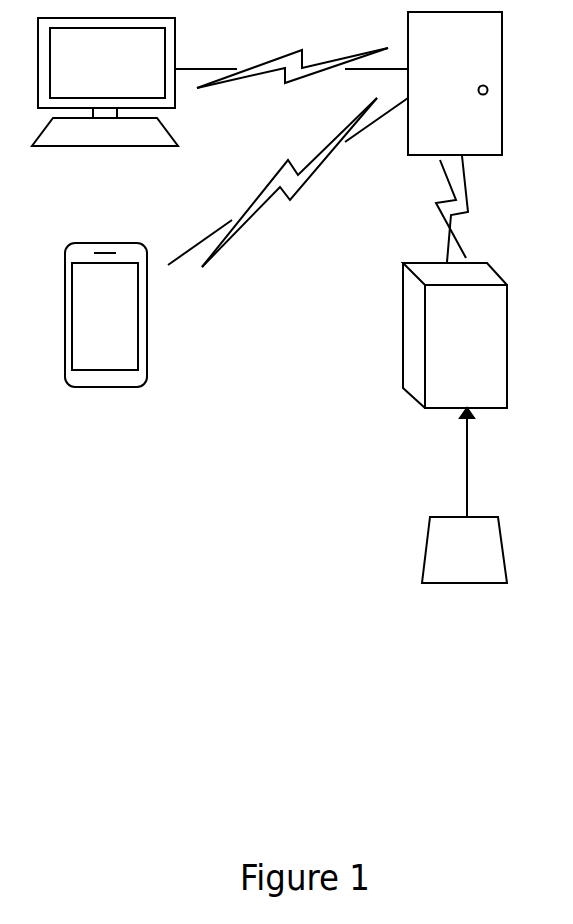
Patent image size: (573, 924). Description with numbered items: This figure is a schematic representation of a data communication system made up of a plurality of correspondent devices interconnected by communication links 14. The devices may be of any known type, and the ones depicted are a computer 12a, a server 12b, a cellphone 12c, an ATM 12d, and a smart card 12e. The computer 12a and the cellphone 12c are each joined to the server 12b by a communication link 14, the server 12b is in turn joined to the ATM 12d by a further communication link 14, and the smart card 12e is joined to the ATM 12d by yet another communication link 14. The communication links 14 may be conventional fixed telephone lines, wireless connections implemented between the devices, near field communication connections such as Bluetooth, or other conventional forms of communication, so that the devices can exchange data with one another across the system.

The computer 12a is at (105, 82).
The server 12b is at (455, 83).
The cellphone 12c is at (106, 315).
The ATM 12d is at (455, 335).
The smart card 12e is at (464, 550).
The communication links 14 is at (338, 262).